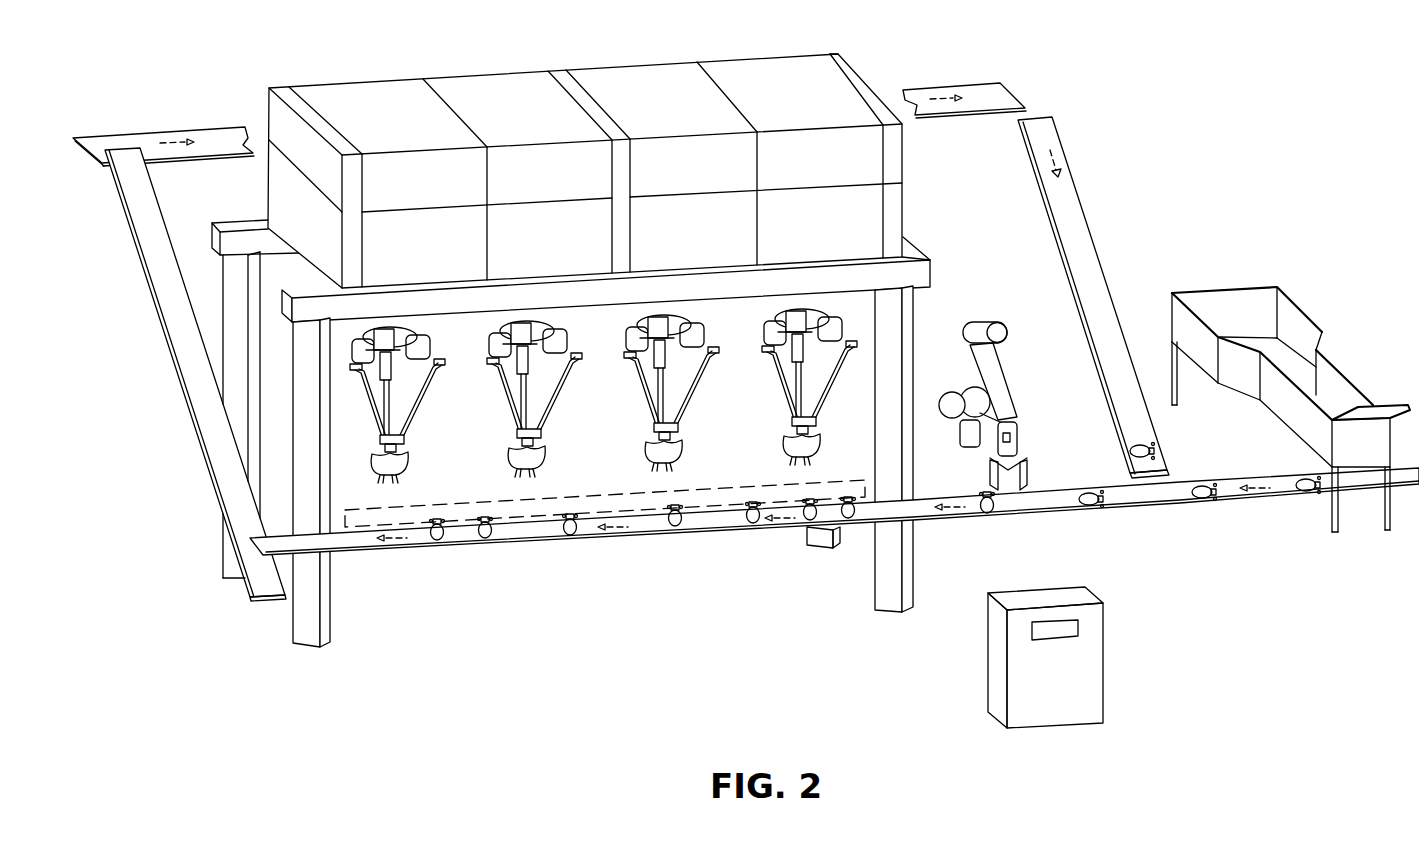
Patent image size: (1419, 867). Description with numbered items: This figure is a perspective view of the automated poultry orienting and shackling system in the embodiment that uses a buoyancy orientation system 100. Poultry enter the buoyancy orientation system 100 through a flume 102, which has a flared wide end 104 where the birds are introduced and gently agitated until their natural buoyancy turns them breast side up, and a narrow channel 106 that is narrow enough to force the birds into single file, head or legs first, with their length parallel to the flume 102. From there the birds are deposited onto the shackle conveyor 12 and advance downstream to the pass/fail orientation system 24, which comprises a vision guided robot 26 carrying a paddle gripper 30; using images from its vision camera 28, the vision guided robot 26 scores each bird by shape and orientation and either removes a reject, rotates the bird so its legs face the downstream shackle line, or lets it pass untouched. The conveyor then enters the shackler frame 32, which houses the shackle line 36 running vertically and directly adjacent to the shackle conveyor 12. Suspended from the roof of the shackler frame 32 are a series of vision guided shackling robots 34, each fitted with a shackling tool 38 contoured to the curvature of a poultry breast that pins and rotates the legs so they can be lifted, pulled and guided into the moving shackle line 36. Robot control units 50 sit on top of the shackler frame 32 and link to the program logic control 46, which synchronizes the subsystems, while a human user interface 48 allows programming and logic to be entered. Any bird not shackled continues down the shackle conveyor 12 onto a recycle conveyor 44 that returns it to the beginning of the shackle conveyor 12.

The shackle conveyor 12 is at (363, 556).
The pass/fail orientation system 24 is at (1001, 400).
The vision guided robot 26 is at (1002, 330).
The vision camera 28 is at (1018, 447).
The paddle gripper 30 is at (1016, 488).
The shackler frame 32 is at (290, 483).
The shackling robots 34 is at (420, 444).
The shackle line 36 is at (705, 508).
The shackling tool 38 is at (410, 472).
The recycle conveyor 44 is at (178, 312).
The program logic control 46 is at (1073, 657).
The human user interface 48 is at (1080, 630).
The robot control units 50 is at (383, 88).
The buoyancy orientation system 100 is at (1292, 376).
The flume 102 is at (1325, 338).
The flared wide end 104 is at (1290, 308).
The narrow channel 106 is at (1345, 387).